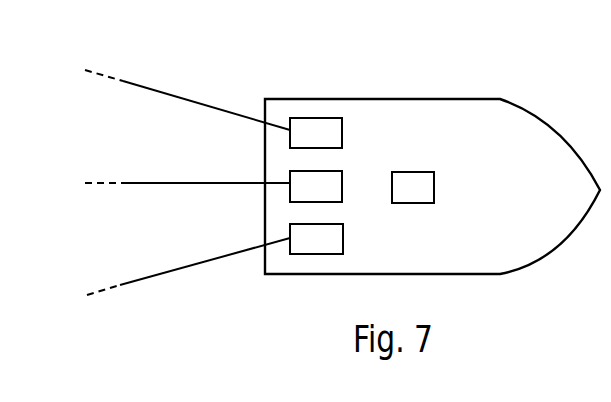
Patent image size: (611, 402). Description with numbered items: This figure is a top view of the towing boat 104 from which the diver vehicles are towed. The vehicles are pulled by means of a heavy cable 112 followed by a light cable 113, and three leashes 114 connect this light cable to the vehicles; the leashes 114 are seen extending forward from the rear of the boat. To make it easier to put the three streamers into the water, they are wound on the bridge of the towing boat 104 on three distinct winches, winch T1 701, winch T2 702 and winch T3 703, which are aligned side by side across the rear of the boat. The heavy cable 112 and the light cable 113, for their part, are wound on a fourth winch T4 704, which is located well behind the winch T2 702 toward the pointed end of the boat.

The towing boat 104 is at (487, 112).
The leashes 114 is at (193, 103).
The winch T1 701 is at (334, 132).
The winch T2 702 is at (297, 193).
The winch T3 703 is at (294, 251).
The fourth winch T4 704 is at (482, 120).
The heavy cable 112 is at (482, 175).
The light cable 113 is at (436, 184).